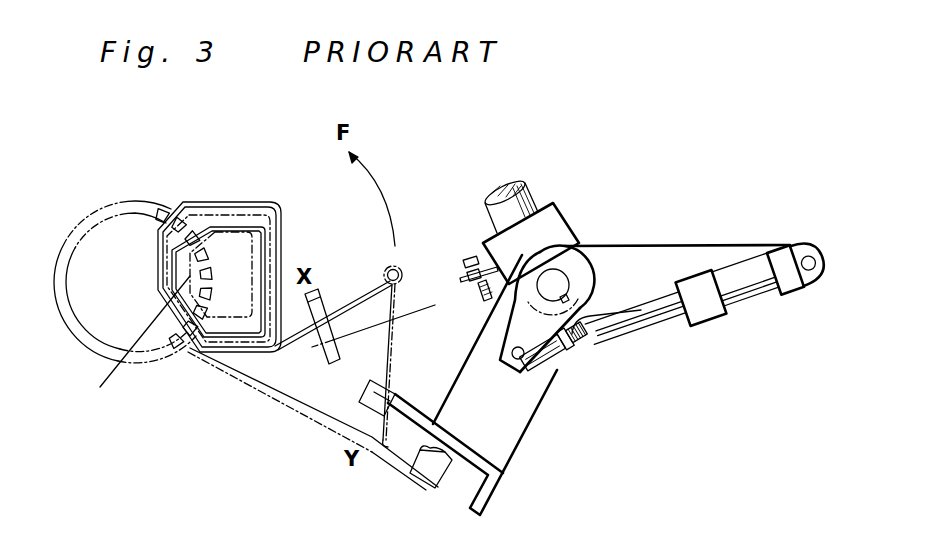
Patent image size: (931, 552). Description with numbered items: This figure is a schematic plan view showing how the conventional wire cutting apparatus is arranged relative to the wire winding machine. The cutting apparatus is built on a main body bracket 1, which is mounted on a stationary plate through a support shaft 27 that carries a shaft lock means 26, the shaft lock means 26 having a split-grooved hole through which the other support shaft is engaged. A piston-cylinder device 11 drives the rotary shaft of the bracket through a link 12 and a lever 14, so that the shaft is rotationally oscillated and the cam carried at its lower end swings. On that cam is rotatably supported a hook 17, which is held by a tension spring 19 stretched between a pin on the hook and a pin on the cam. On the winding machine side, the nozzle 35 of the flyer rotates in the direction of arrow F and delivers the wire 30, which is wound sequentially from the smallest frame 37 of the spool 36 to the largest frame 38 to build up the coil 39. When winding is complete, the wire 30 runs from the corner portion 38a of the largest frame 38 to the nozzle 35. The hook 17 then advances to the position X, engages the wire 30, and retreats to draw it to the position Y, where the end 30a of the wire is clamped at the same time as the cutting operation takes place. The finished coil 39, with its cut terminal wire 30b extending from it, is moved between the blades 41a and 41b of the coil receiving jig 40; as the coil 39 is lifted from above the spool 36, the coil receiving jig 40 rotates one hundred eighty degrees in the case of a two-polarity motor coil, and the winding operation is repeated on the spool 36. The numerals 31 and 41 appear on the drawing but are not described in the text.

The main body bracket 1 is at (517, 418).
The piston-cylinder device 11 is at (746, 286).
The link 12 is at (570, 356).
The lever 14 is at (530, 338).
The hook 17 is at (370, 494).
The tension spring 19 is at (573, 268).
The shaft lock means 26 is at (551, 210).
The support shaft 27 is at (500, 210).
The wire 30 is at (352, 291).
The end of the wire 30a is at (389, 380).
The cut terminal wire 30b is at (288, 418).
The adjusting bolt 31 is at (468, 258).
The nozzle 35 is at (398, 265).
The spool 36 is at (287, 220).
The smallest frame 37 is at (129, 346).
The largest frame 38 is at (252, 208).
The corner portion 38a is at (331, 360).
The coil 39 is at (213, 232).
The coil receiving jig 40 is at (104, 250).
The pawl 41 is at (163, 210).
The blade 41a is at (170, 350).
The blade 41b is at (190, 337).